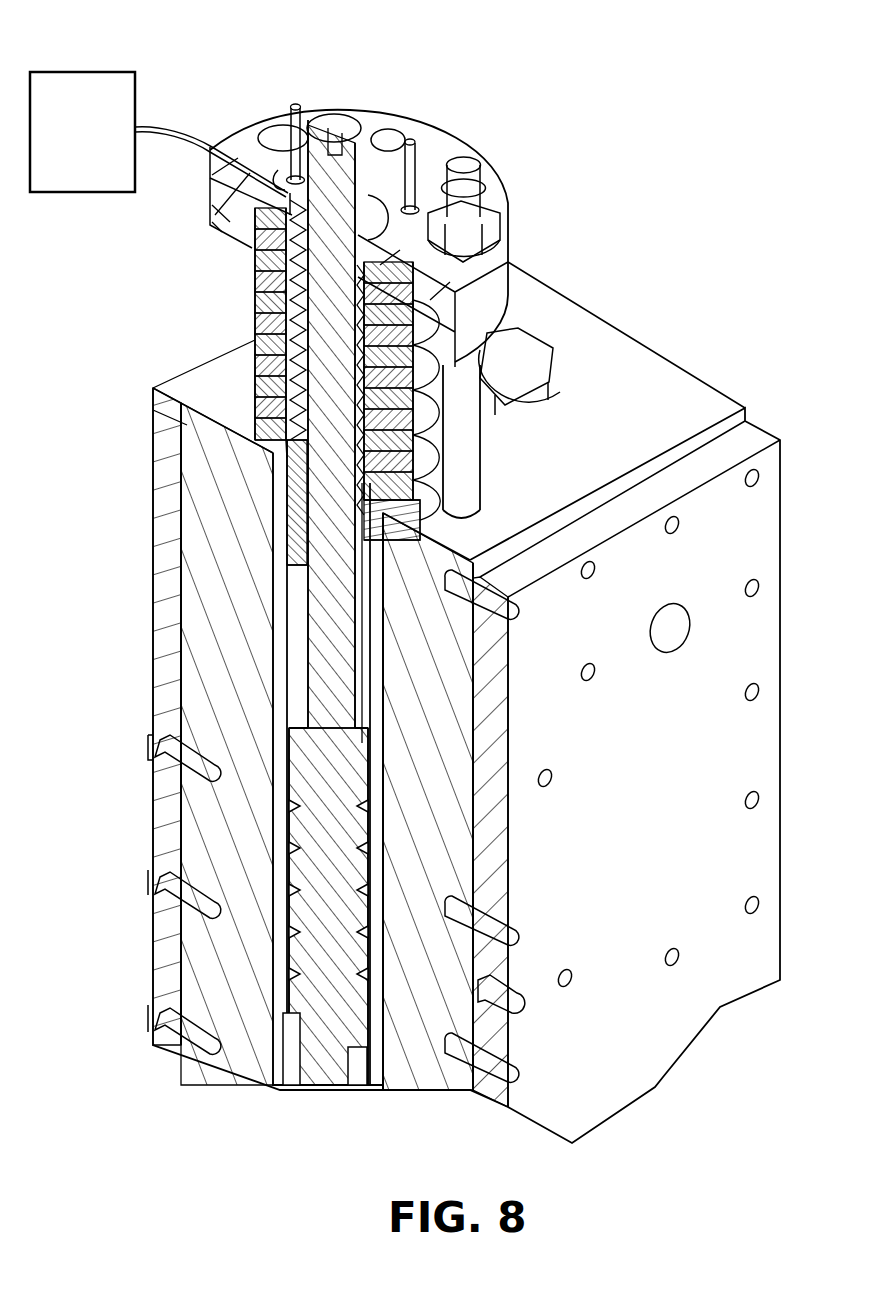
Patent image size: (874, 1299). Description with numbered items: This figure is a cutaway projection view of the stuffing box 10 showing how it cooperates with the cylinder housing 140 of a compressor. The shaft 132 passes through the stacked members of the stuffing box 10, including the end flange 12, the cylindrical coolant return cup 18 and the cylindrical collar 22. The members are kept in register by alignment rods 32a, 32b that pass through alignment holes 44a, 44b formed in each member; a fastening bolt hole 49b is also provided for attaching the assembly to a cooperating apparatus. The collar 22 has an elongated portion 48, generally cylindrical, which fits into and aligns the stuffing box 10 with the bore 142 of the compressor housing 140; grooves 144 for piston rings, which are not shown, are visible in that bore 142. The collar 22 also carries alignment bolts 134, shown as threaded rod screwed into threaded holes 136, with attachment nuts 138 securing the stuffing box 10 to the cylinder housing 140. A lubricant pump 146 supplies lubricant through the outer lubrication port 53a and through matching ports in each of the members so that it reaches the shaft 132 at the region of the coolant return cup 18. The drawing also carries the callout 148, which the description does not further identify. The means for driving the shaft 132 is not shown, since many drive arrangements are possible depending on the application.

The stuffing box 10 is at (508, 165).
The end flange 12 is at (387, 113).
The cylindrical coolant return cup 18 is at (250, 336).
The cylindrical collar 22 is at (157, 376).
The alignment rod 32a is at (292, 106).
The alignment rod 32b is at (413, 140).
The alignment hole 44a is at (285, 185).
The alignment hole 44b is at (410, 207).
The elongated portion 48 is at (255, 417).
The fastening bolt hole 49b is at (278, 135).
The outer lubrication port 53a is at (213, 197).
The shaft 132 is at (345, 120).
The alignment bolt 134 is at (465, 466).
The threaded hole 136 is at (482, 505).
The attachment nut 138 is at (482, 227).
The cylinder housing 140 is at (668, 812).
The bore 142 is at (287, 590).
The grooves 144 is at (290, 745).
The lubricant pump 146 is at (102, 143).
The retaining ring 148 is at (258, 362).